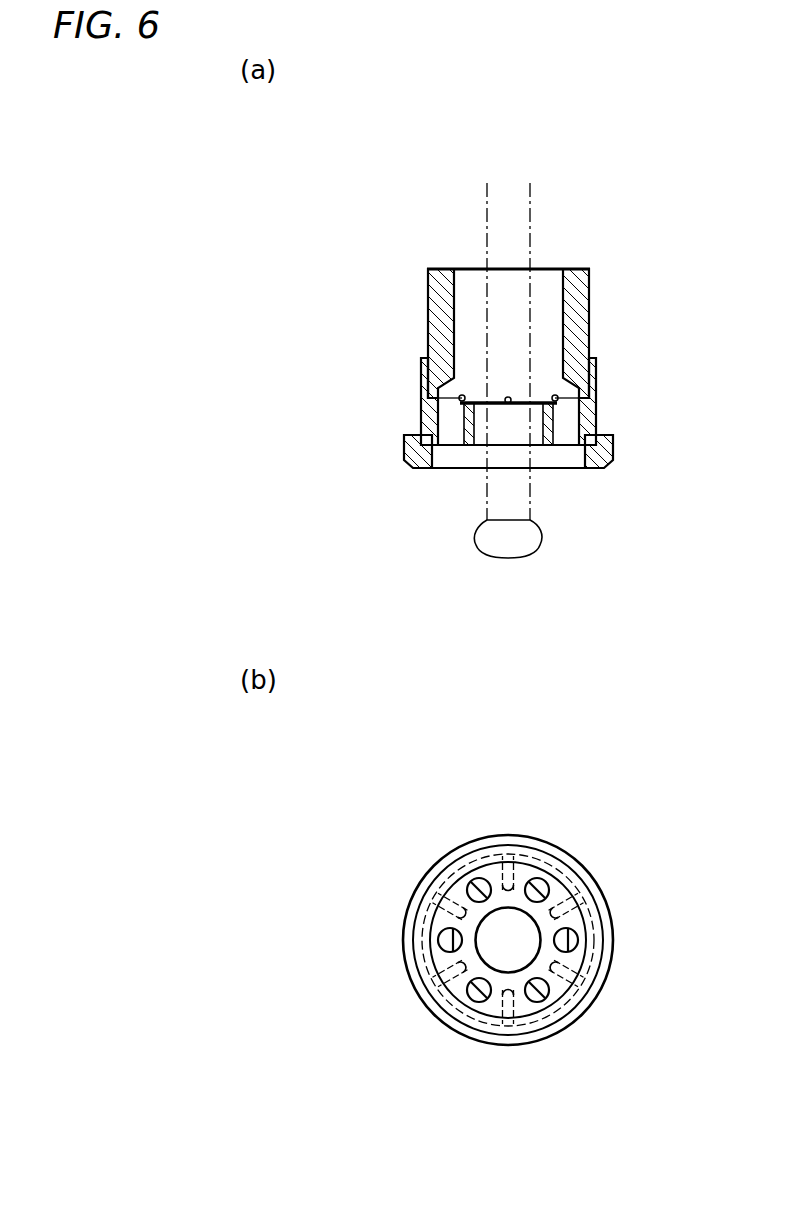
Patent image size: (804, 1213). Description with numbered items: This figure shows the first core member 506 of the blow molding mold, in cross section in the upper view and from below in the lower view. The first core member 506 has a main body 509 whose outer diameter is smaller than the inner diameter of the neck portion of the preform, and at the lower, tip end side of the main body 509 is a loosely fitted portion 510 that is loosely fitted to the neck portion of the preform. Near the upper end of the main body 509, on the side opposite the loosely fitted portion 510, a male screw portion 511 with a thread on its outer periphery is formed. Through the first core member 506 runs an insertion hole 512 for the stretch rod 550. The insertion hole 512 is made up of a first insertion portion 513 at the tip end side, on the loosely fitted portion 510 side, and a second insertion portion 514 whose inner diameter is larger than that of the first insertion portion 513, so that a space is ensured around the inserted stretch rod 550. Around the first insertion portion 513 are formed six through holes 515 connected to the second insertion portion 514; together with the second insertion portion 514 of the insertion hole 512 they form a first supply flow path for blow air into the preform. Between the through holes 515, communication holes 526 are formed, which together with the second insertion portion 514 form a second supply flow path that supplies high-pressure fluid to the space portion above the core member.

The first core member 506 is at (617, 192).
The male screw portion 511 is at (594, 308).
The main body 509 is at (587, 375).
The loosely fitted portion 510 is at (603, 450).
The insertion hole 512 is at (338, 281).
The first insertion portion 513 is at (480, 430).
The second insertion portion 514 is at (465, 305).
The through holes 515 is at (455, 435).
The communication holes 526 is at (508, 400).
The stretch rod 550 is at (538, 548).